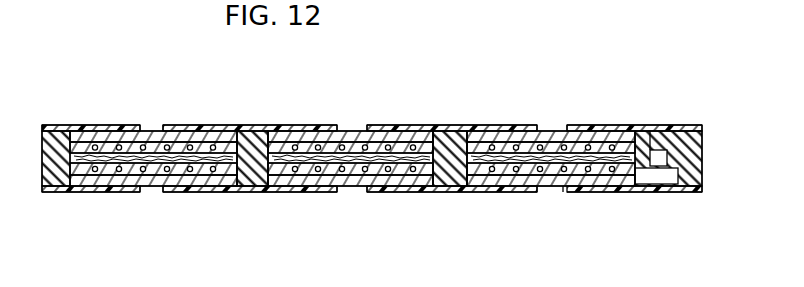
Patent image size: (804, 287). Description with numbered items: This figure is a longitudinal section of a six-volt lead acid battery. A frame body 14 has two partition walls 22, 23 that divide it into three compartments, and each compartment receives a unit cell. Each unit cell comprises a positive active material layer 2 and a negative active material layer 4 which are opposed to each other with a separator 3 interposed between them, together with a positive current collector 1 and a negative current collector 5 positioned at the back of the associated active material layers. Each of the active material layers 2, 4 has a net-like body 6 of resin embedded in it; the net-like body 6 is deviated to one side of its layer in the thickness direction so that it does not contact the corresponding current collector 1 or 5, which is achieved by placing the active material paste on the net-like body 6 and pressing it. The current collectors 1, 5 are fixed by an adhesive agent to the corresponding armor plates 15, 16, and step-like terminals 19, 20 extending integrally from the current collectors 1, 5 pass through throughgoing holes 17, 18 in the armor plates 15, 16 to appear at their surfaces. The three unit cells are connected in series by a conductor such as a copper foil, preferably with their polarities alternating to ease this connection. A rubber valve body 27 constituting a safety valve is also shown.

The positive current collector 1 is at (378, 124).
The positive active material layer 2 is at (277, 125).
The separator 3 is at (192, 124).
The negative active material layer 4 is at (213, 124).
The negative current collector 5 is at (101, 125).
The net-like body 6 is at (320, 125).
The frame body 14 is at (60, 192).
The armor plate 15 is at (123, 192).
The armor plate 16 is at (82, 126).
The throughgoing hole 17 is at (160, 192).
The throughgoing hole 18 is at (145, 125).
The step-like terminal 19 is at (358, 125).
The step-like terminal 20 is at (157, 125).
The partition wall 22 is at (260, 190).
The partition wall 23 is at (457, 192).
The rubber valve body 27 is at (672, 125).